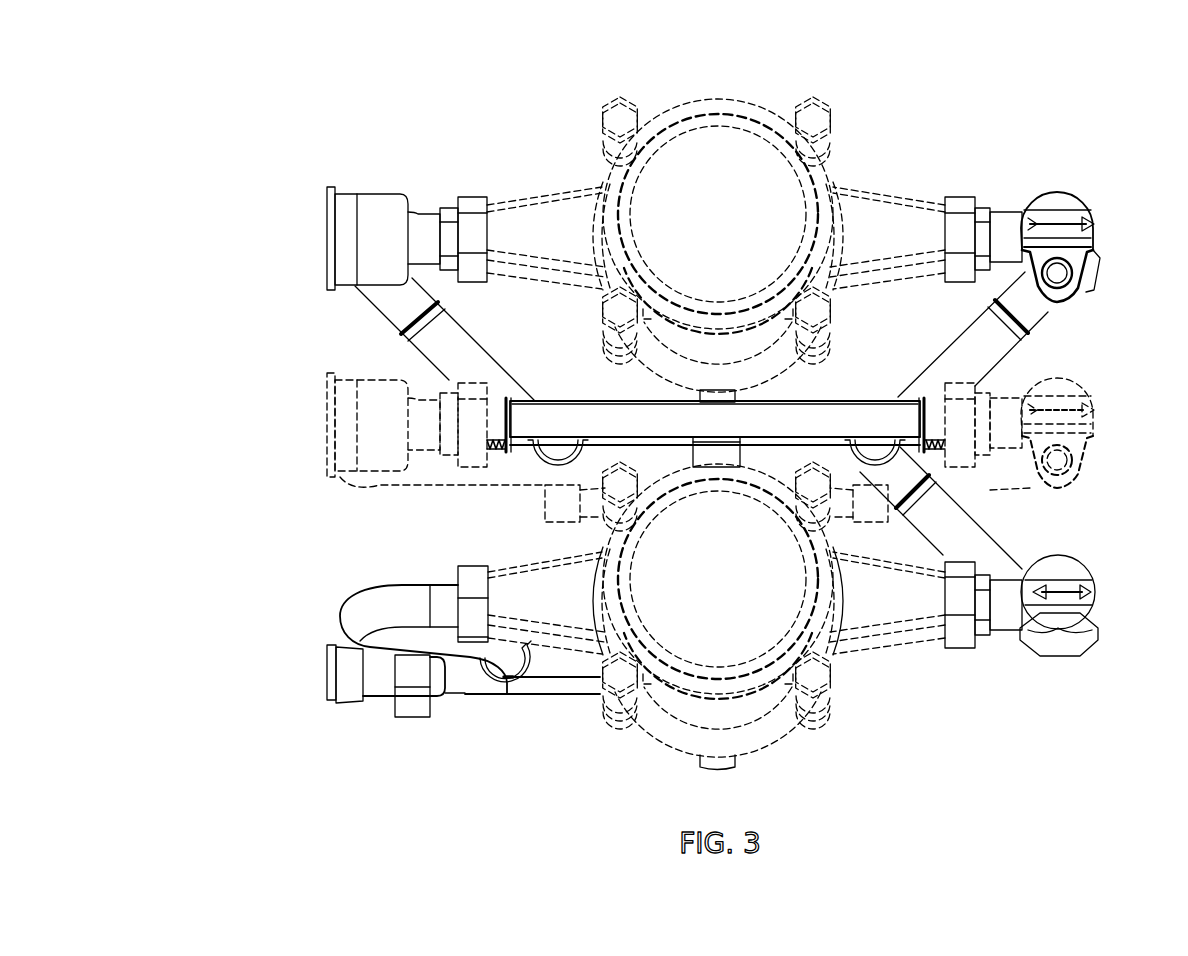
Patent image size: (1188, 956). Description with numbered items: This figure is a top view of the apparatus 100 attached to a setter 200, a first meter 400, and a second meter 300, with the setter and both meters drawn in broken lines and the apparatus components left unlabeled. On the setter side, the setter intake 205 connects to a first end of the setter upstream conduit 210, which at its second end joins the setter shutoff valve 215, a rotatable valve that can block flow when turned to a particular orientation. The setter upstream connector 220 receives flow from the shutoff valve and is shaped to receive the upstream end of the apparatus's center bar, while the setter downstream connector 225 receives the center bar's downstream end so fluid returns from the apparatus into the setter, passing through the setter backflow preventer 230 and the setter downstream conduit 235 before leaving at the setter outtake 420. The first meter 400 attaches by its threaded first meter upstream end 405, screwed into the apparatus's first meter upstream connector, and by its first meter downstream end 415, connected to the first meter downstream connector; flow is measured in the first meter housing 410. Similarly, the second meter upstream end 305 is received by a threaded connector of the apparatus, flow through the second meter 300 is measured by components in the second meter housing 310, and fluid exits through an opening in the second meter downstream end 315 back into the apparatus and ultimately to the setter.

The apparatus 100 is at (318, 562).
The setter 200 is at (851, 533).
The setter intake 205 is at (873, 520).
The setter upstream conduit 210 is at (1030, 484).
The setter shutoff valve 215 is at (1095, 410).
The setter upstream connector 220 is at (948, 418).
The setter downstream connector 225 is at (477, 396).
The setter backflow preventer 230 is at (326, 414).
The setter downstream conduit 235 is at (412, 483).
The second meter 300 is at (736, 86).
The second meter upstream end 305 is at (943, 232).
The second meter housing 310 is at (700, 223).
The second meter downstream end 315 is at (518, 205).
The first meter 400 is at (638, 760).
The first meter upstream end 405 is at (963, 648).
The first meter housing 410 is at (700, 588).
The first meter downstream end 415 is at (493, 567).
The setter outtake 420 is at (545, 489).